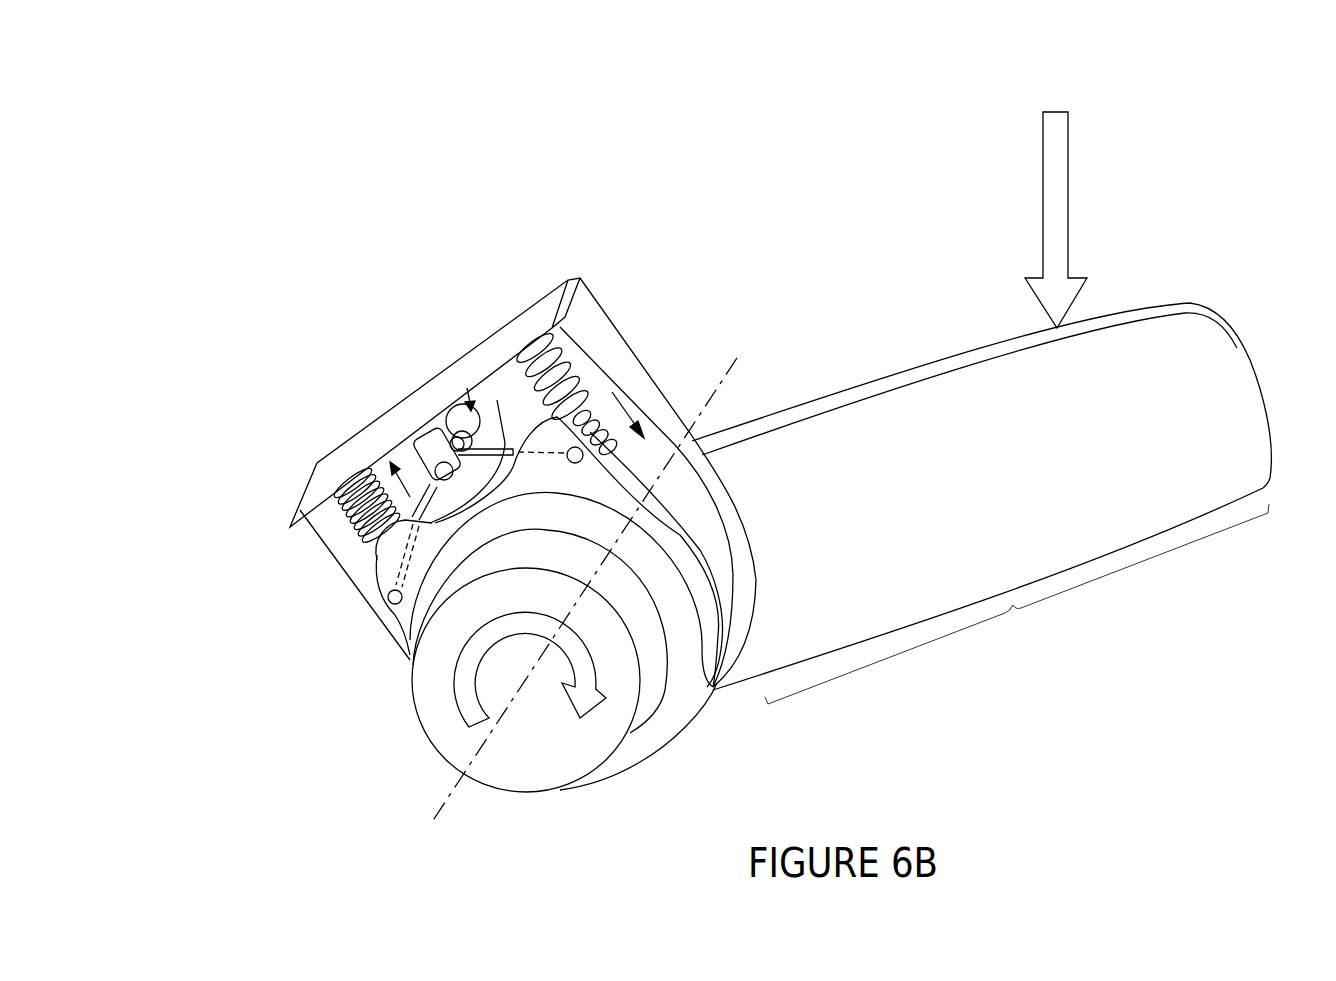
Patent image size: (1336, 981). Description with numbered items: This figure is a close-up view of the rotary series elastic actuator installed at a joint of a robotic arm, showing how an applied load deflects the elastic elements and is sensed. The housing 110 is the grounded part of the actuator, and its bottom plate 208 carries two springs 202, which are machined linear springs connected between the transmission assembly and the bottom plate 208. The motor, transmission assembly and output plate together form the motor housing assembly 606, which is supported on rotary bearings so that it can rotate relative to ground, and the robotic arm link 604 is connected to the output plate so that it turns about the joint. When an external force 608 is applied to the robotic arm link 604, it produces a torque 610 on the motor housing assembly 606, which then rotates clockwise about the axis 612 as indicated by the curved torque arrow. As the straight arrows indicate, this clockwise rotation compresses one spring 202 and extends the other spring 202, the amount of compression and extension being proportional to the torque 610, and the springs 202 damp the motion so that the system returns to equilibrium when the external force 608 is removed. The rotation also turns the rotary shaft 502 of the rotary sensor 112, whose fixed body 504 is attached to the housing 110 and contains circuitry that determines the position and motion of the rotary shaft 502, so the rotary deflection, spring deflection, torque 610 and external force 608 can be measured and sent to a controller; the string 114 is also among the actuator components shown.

The housing 110 is at (752, 596).
The rotary sensor 112 is at (468, 440).
The string 114 is at (497, 400).
The springs 202 is at (300, 558).
The bottom plate 208 is at (335, 461).
The rotary shaft 502 is at (452, 438).
The fixed body 504 is at (457, 422).
The robotic arm link 604 is at (981, 503).
The motor housing assembly 606 is at (660, 743).
The external force 608 is at (1069, 190).
The torque 610 is at (516, 653).
The axis 612 is at (728, 372).